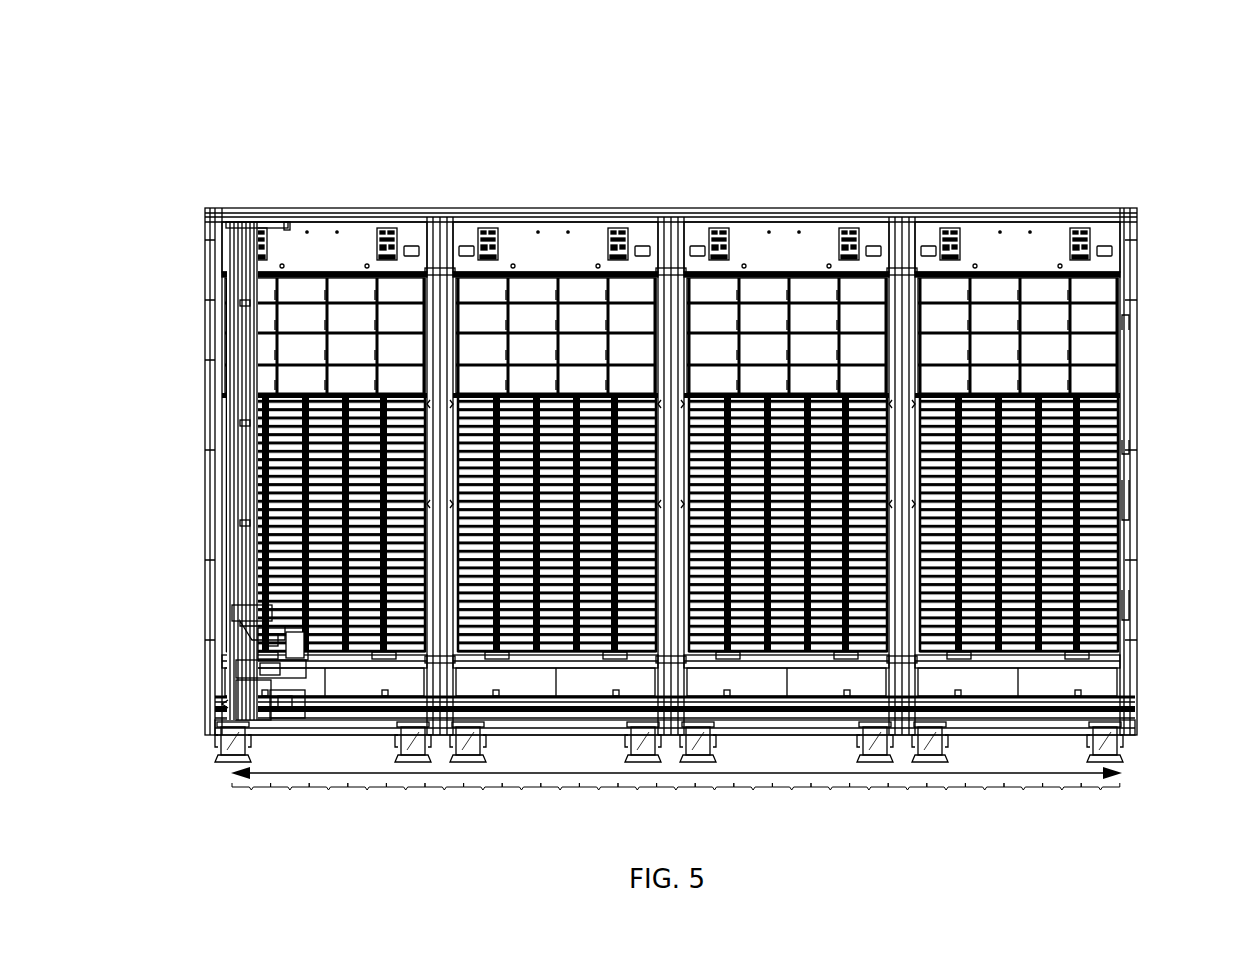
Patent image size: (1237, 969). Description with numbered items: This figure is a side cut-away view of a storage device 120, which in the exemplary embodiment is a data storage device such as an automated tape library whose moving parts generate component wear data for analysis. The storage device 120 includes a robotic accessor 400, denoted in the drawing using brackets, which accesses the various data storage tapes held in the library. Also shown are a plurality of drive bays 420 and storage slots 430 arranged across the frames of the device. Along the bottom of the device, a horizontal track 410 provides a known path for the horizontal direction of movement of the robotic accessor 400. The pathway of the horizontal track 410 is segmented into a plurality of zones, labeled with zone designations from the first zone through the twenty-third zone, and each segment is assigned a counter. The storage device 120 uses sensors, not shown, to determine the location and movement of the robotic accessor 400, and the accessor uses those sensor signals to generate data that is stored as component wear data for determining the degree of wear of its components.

The storage device 120 is at (985, 156).
The robotic accessor 400 is at (200, 612).
The horizontal track 410 is at (1095, 696).
The drive bays 420 is at (1090, 354).
The storage slots 430 is at (1092, 573).